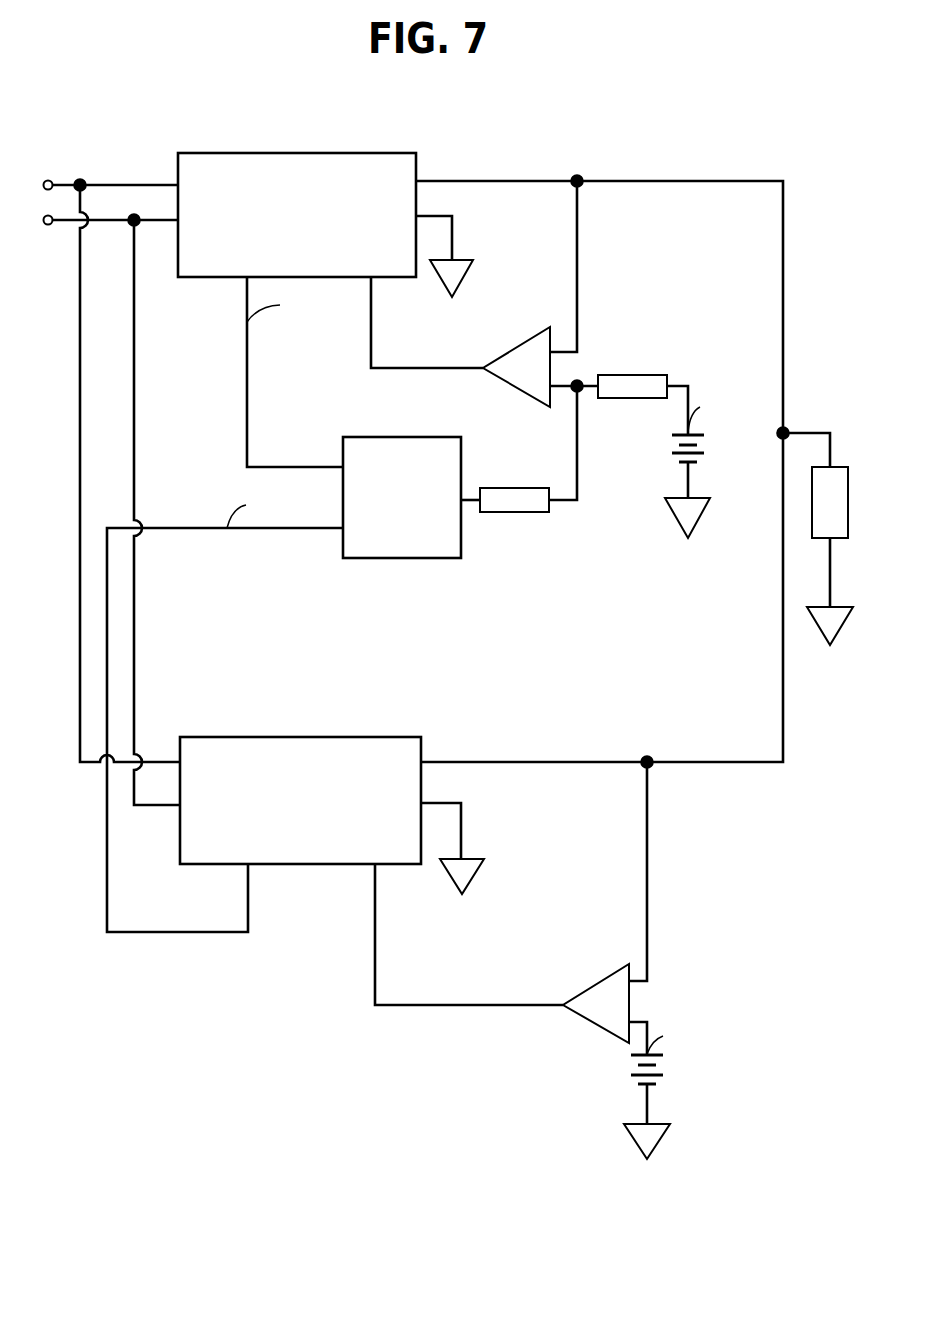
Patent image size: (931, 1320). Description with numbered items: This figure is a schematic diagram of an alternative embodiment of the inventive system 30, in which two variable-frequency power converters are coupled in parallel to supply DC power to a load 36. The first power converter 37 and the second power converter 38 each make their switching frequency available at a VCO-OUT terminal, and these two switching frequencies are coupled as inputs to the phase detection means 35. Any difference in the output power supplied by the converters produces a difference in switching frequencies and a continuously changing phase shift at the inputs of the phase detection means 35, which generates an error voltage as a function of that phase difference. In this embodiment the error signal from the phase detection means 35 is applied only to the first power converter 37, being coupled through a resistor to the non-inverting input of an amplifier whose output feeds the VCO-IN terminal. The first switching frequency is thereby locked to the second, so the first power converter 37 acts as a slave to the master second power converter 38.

The system 30 is at (497, 161).
The phase detection means 35 is at (369, 437).
The load 36 is at (848, 510).
The first power converter 37 is at (243, 153).
The second power converter 38 is at (200, 737).